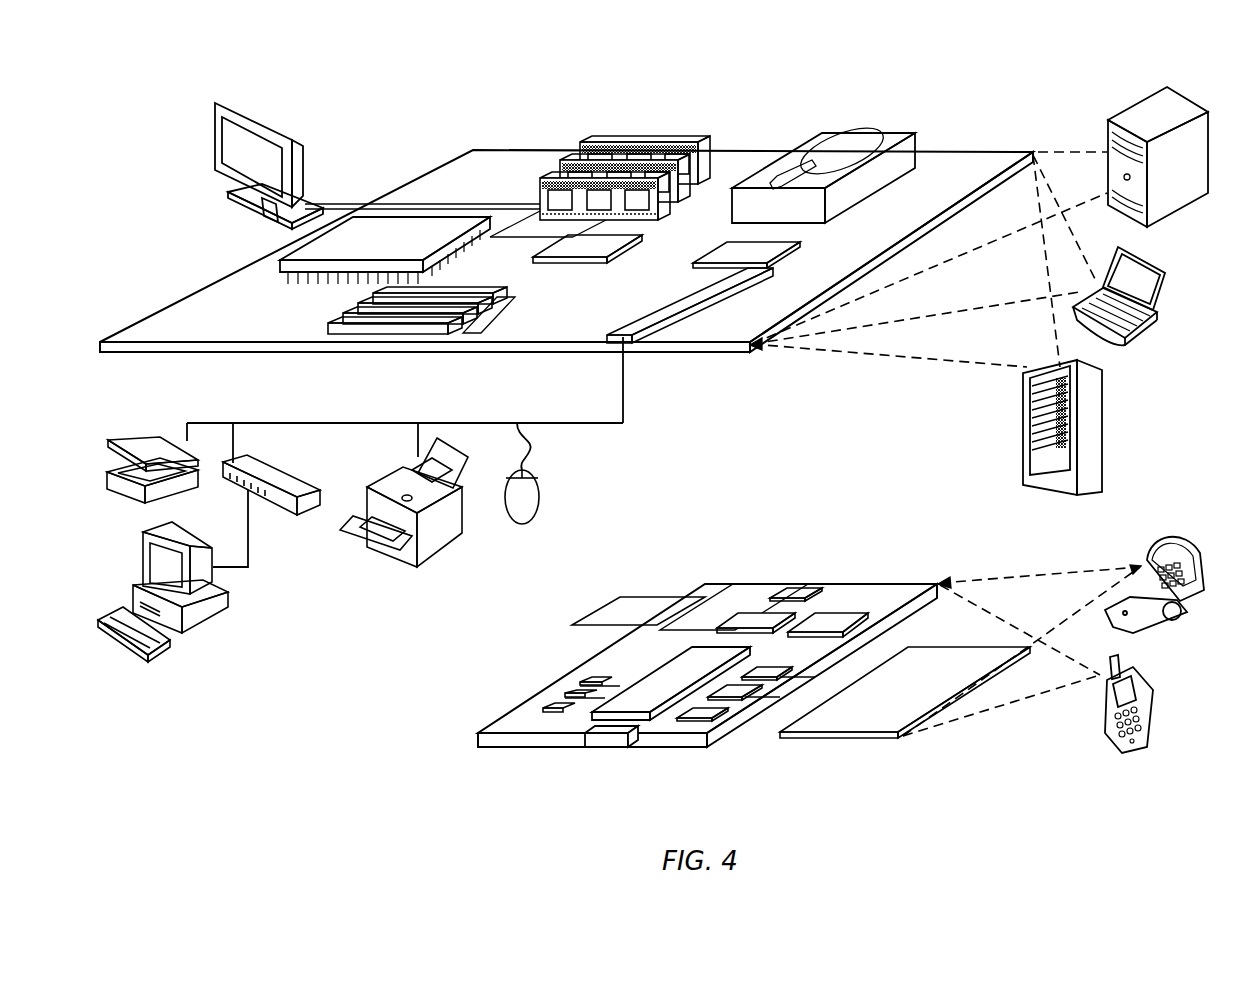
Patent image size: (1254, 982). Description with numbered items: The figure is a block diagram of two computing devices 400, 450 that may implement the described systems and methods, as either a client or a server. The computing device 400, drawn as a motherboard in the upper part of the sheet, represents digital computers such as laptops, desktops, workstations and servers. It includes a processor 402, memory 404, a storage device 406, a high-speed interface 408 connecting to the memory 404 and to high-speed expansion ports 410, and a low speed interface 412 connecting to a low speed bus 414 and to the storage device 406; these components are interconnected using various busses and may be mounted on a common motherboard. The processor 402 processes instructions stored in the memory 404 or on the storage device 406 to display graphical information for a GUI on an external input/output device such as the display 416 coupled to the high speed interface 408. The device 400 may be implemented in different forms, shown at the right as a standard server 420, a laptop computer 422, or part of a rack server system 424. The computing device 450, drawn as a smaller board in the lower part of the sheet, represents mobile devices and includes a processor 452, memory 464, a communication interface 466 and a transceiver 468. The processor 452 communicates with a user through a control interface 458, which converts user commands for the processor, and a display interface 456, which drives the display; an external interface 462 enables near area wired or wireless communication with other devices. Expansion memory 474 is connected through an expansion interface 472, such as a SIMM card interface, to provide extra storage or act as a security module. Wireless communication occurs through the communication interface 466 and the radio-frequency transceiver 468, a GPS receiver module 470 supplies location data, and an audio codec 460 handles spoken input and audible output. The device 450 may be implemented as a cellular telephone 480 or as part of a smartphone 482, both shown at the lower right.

The computing device 400 is at (401, 121).
The processor 402 is at (280, 262).
The memory 404 is at (590, 143).
The storage device 406 is at (810, 133).
The high-speed interface 408 is at (570, 250).
The high-speed expansion ports 410 is at (347, 319).
The low speed interface 412 is at (730, 250).
The low speed bus 414 is at (629, 343).
The display 416 is at (208, 101).
The standard server 420 is at (1107, 135).
The laptop computer 422 is at (1178, 268).
The rack server system 424 is at (1022, 452).
The computing device 450 is at (447, 752).
The processor 452 is at (645, 706).
The display interface 456 is at (700, 714).
The control interface 458 is at (742, 693).
The audio codec 460 is at (762, 673).
The external interface 462 is at (608, 735).
The memory 464 is at (560, 695).
The communication interface 466 is at (755, 618).
The transceiver 468 is at (833, 620).
The GPS receiver module 470 is at (803, 585).
The expansion interface 472 is at (688, 603).
The expansion memory 474 is at (609, 597).
The cellular telephone 480 is at (1157, 552).
The smartphone 482 is at (1100, 713).